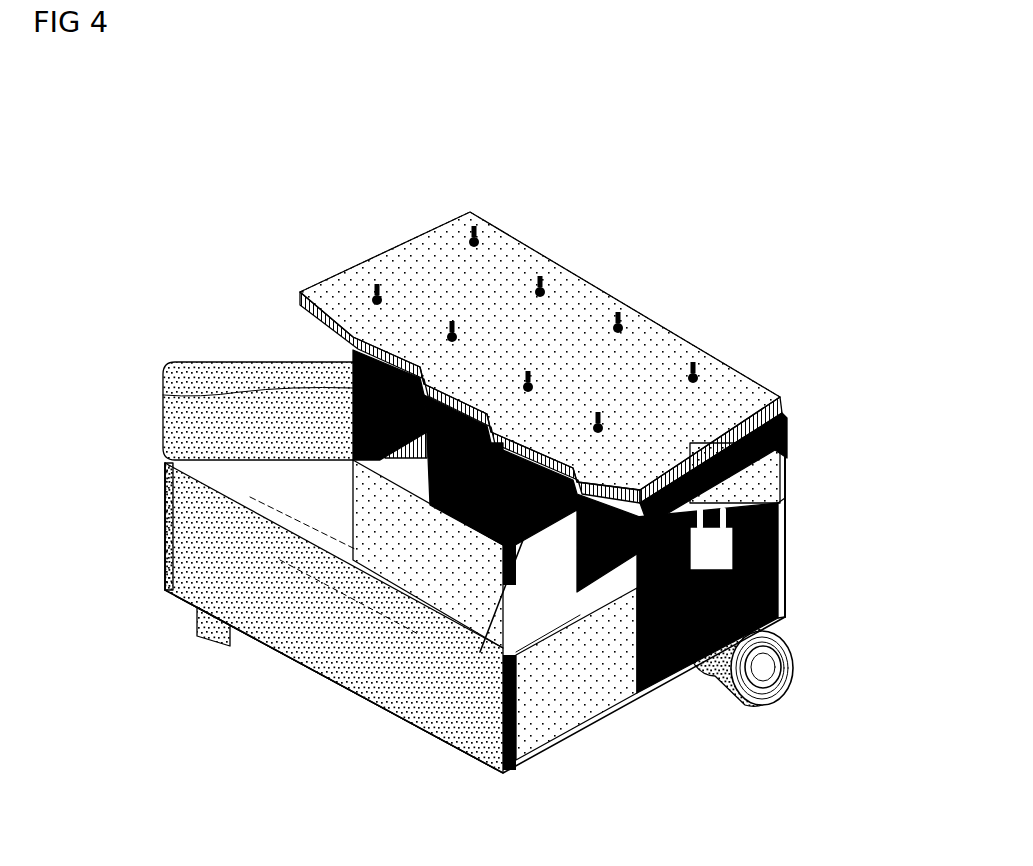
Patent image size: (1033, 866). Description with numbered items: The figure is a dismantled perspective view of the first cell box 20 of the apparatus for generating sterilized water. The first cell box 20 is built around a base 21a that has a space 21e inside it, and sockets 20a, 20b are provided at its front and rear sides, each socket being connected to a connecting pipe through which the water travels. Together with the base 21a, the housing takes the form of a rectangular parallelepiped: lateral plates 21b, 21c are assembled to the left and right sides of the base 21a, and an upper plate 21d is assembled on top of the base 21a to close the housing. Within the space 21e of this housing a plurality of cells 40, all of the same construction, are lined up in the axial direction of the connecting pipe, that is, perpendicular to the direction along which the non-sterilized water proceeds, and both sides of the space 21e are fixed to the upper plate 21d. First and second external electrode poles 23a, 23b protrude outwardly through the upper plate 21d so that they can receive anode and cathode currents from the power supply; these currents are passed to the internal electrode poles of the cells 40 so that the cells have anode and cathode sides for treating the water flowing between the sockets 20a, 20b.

The first cell box 20 is at (618, 211).
The socket 20a is at (790, 634).
The socket 20b is at (300, 378).
The base 21a is at (572, 672).
The lateral plate 21b is at (363, 668).
The lateral plate 21c is at (788, 517).
The upper plate 21d is at (668, 352).
The space 21e is at (607, 625).
The first external electrode pole 23a is at (374, 296).
The second external electrode pole 23b is at (476, 237).
The cell 40 is at (432, 478).